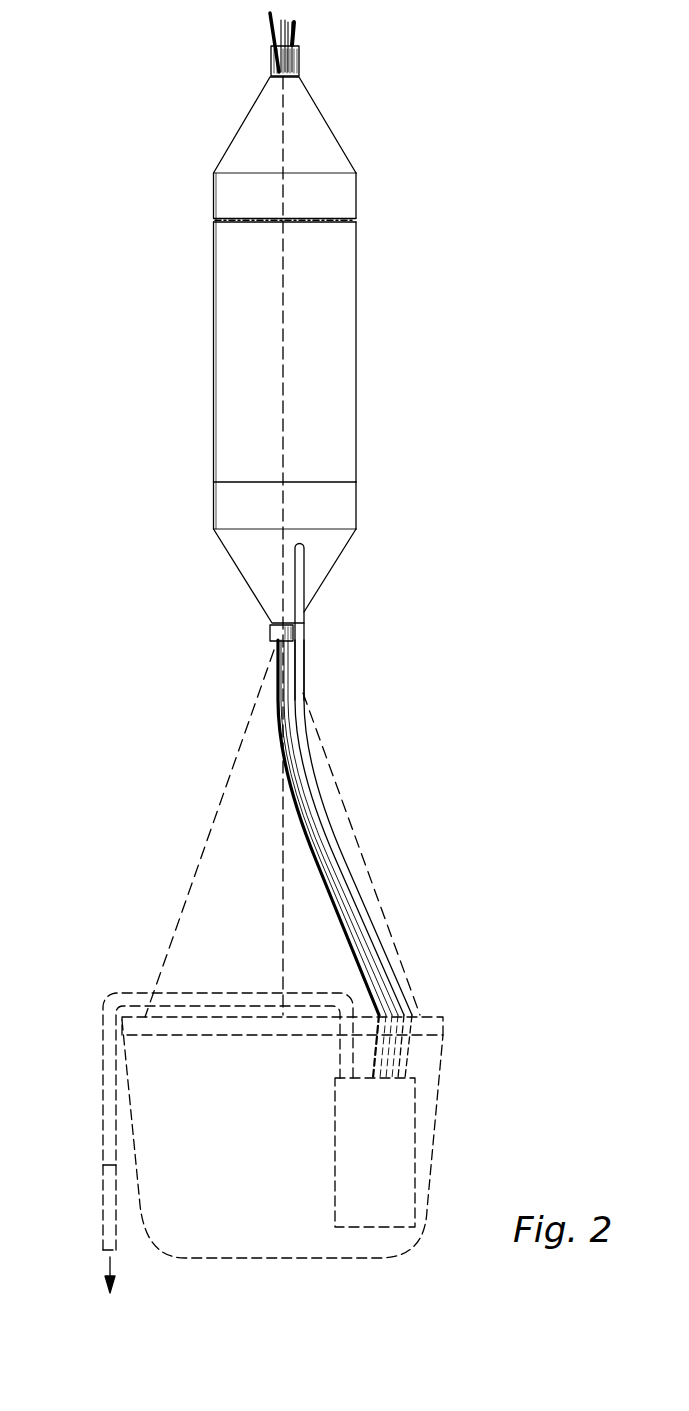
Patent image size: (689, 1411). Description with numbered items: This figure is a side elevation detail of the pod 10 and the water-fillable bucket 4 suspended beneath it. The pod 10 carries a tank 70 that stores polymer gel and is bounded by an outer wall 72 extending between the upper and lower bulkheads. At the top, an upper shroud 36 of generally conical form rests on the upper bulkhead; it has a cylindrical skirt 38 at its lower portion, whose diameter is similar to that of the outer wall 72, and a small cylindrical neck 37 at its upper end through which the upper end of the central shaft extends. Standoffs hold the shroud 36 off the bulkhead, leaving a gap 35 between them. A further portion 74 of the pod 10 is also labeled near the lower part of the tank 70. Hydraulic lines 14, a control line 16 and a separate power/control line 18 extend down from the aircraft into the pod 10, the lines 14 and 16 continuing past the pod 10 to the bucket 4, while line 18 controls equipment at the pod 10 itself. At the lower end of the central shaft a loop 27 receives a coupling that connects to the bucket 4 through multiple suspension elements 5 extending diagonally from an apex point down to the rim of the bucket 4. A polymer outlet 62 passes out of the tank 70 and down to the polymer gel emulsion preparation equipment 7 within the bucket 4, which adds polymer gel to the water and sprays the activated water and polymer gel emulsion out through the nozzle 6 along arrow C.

The pod 10 is at (160, 287).
The hydraulic lines 14 is at (298, 31).
The control line 16 is at (276, 33).
The power/control line 18 is at (272, 42).
The loop 27 is at (271, 631).
The gap 35 is at (322, 221).
The upper shroud 36 is at (305, 135).
The neck 37 is at (269, 78).
The skirt 38 is at (213, 197).
The polymer outlet 62 is at (300, 738).
The tank 70 is at (320, 345).
The outer wall 72 is at (356, 437).
The lower body segment 74 is at (222, 508).
The suspension elements 5 is at (380, 892).
The nozzle 6 is at (103, 1118).
The bucket 4 is at (443, 1141).
The polymer gel emulsion preparation equipment 7 is at (346, 1153).
The arrow C is at (110, 1262).